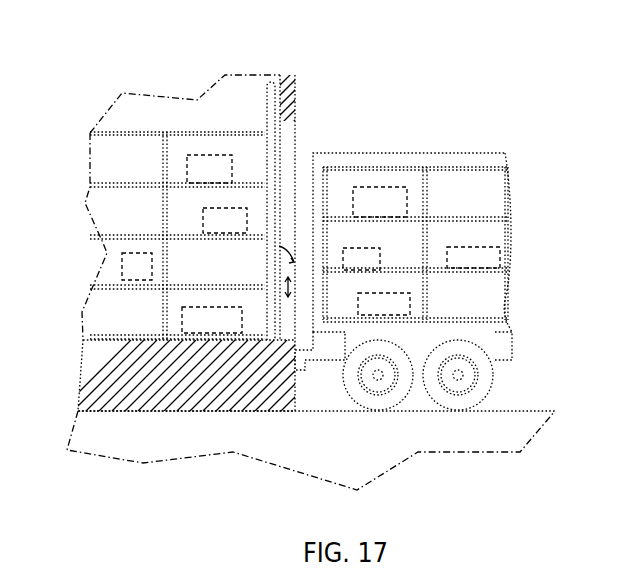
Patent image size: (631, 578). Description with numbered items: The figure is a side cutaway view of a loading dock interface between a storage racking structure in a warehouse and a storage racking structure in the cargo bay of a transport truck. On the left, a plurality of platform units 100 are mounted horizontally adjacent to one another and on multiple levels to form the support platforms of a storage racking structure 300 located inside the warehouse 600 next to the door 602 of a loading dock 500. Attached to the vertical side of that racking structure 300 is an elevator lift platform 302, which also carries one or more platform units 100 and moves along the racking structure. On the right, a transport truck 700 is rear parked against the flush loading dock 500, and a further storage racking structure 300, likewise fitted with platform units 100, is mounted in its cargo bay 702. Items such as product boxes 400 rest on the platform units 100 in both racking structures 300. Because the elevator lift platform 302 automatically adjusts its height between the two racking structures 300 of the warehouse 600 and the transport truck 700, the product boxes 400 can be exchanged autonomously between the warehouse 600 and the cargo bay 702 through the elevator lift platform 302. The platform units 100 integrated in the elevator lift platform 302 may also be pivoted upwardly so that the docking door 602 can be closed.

The platform unit 100 is at (182, 183).
The storage racking structure 300 is at (128, 132).
The elevator lift platform 302 is at (267, 102).
The product box 400 is at (225, 178).
The loading dock 500 is at (293, 393).
The warehouse 600 is at (297, 75).
The door 602 is at (285, 143).
The transport truck 700 is at (500, 157).
The cargo bay 702 is at (485, 198).